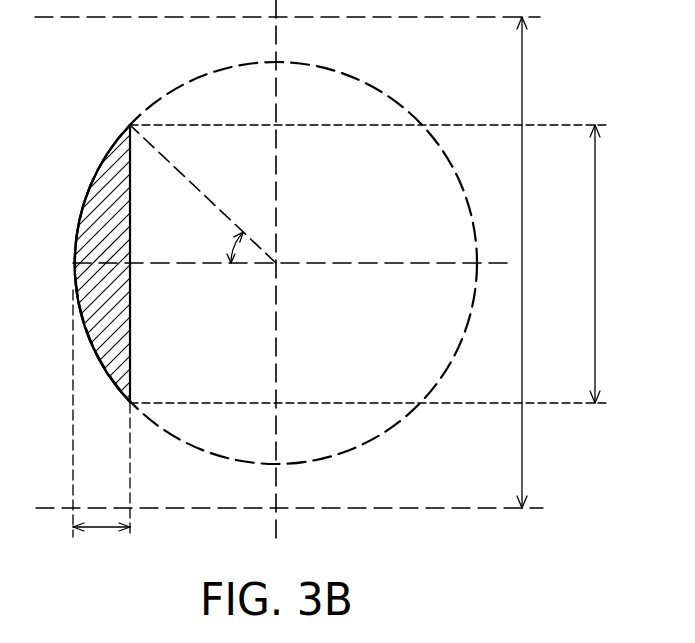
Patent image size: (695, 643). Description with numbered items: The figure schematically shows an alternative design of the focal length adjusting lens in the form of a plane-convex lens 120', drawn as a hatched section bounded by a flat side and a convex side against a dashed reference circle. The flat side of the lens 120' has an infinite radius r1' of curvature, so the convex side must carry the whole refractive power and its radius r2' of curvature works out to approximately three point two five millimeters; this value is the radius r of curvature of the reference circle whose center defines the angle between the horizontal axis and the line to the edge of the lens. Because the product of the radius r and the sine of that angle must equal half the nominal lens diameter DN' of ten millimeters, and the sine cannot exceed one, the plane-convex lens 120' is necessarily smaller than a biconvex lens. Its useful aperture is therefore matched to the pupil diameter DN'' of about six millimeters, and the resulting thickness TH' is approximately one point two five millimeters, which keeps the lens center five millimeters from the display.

The plane-convex lens 120' is at (265, 271).
The radius of curvature of the flat surface r1' is at (145, 221).
The radius of curvature of the convex surface r2' is at (89, 260).
The radius of curvature r is at (218, 210).
The diameter of the focal length adjusting lens DN' is at (541, 262).
The diameter of the pupil DN'' is at (620, 264).
The thickness TH' is at (101, 548).